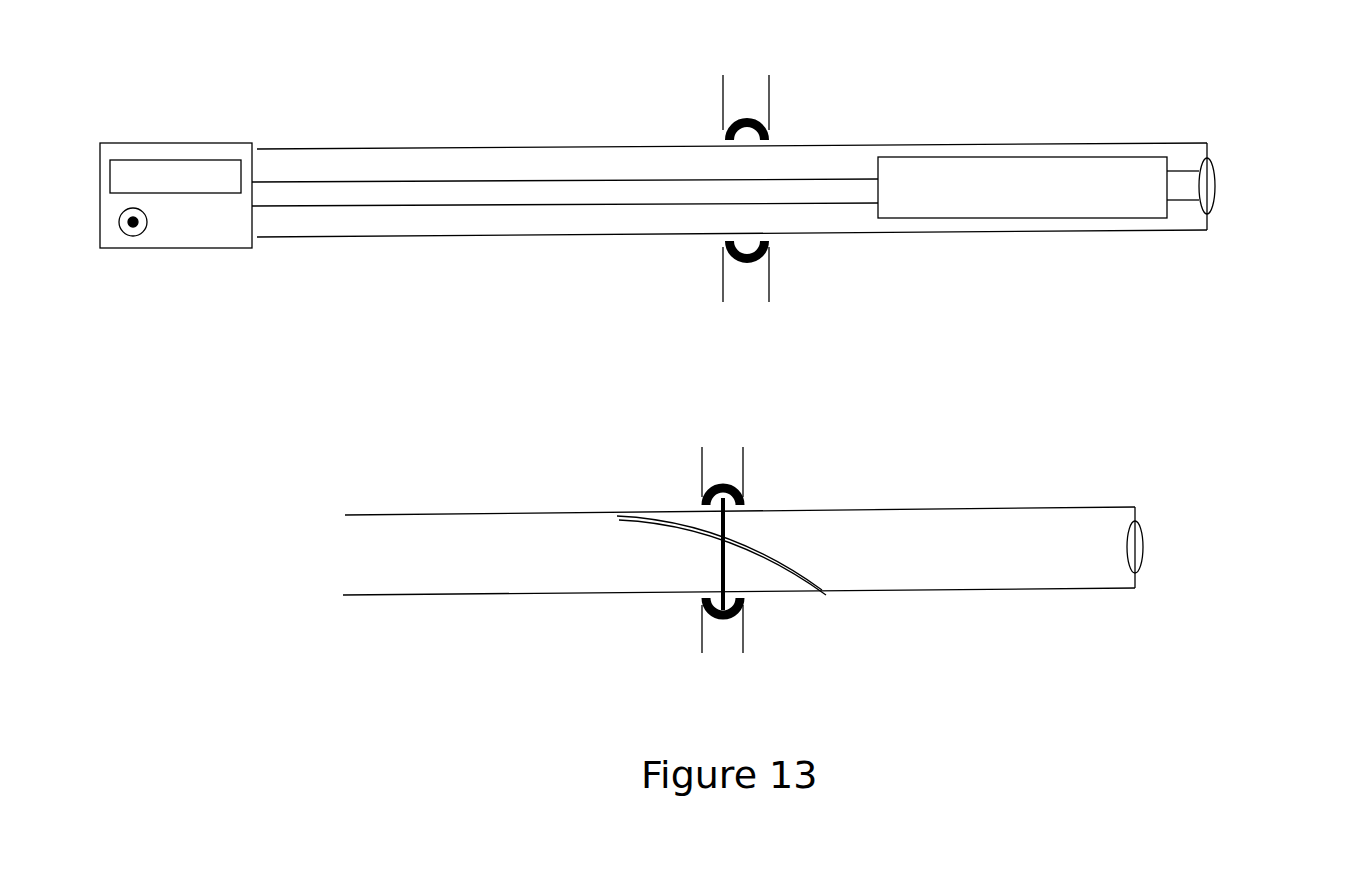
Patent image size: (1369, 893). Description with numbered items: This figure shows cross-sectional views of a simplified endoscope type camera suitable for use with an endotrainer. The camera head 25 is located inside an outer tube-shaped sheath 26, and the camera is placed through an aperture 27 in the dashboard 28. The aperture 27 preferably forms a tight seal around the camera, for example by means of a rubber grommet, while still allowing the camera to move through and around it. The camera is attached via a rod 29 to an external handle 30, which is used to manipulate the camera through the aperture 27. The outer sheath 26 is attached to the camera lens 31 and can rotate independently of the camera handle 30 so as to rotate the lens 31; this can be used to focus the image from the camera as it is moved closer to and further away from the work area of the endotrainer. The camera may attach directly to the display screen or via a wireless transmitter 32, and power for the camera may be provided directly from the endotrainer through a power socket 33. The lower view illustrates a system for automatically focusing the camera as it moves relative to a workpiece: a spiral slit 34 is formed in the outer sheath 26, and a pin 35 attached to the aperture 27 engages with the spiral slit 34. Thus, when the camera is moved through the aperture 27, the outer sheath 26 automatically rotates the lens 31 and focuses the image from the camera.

The camera head 25 is at (1117, 158).
The outer tube-shaped sheath 26 is at (355, 253).
The aperture 27 is at (783, 136).
The dashboard 28 is at (707, 87).
The rod 29 is at (295, 182).
The external handle 30 is at (203, 128).
The camera lens 31 is at (1225, 185).
The wireless transmitter 32 is at (142, 162).
The power socket 33 is at (135, 250).
The spiral slit 34 is at (657, 500).
The pin 35 is at (742, 511).